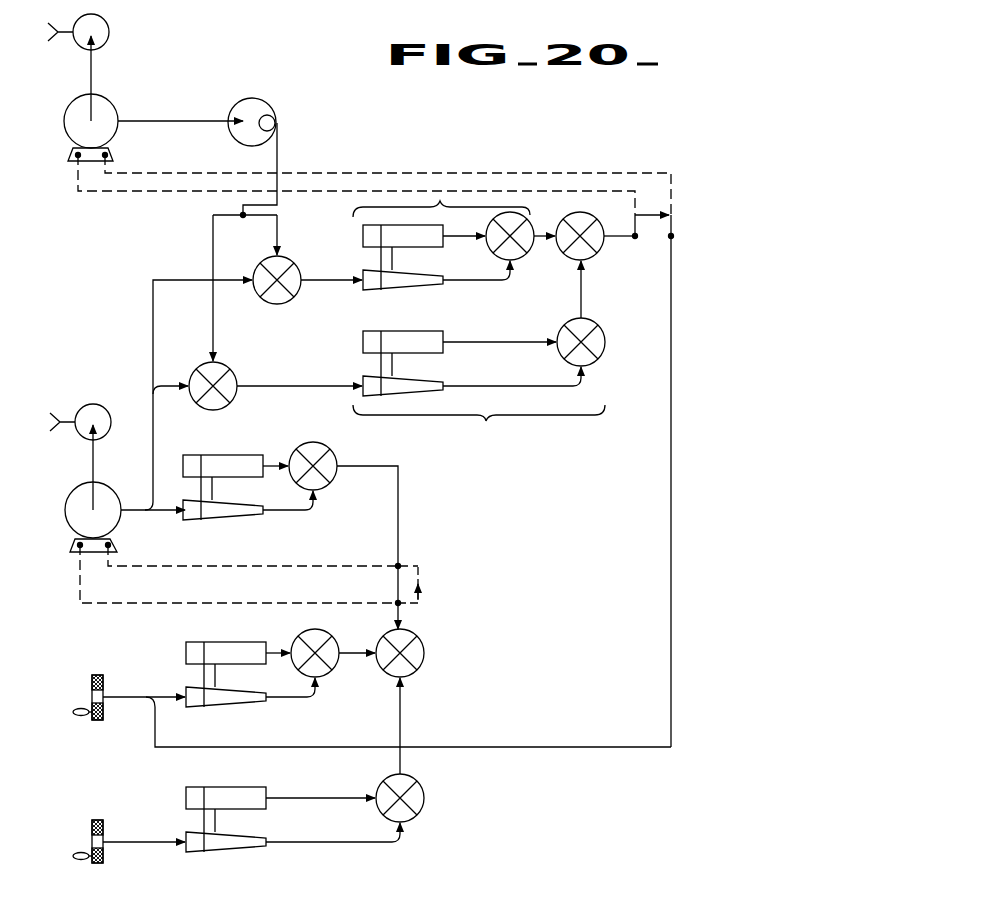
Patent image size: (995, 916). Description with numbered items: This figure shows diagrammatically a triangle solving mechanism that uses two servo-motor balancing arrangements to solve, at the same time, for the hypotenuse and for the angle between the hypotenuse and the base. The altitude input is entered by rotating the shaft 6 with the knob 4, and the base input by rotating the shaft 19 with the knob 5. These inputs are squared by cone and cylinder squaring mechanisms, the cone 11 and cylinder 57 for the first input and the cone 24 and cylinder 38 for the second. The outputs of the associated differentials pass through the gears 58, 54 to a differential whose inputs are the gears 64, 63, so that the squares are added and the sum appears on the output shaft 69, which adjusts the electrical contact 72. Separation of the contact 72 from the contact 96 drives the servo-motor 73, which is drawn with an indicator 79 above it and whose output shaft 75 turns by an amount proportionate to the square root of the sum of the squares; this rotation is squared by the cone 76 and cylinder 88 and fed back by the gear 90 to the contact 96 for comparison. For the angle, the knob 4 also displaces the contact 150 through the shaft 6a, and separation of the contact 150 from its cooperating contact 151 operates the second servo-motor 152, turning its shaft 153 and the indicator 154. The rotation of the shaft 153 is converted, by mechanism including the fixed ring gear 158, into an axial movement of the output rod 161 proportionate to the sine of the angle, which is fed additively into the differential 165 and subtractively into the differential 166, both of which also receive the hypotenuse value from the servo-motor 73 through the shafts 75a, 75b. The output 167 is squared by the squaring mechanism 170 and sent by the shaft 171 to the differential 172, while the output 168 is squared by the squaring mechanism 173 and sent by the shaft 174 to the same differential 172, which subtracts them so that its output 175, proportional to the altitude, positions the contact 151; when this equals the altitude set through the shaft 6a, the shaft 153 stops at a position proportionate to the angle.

The knob 4 is at (92, 684).
The knob 5 is at (92, 830).
The shaft 6 is at (155, 696).
The shaft 6a is at (550, 746).
The cone 11 is at (246, 702).
The shaft 19 is at (148, 843).
The cone 24 is at (245, 845).
The cylinder 38 is at (240, 791).
The gear 54 is at (416, 786).
The cylinder 57 is at (241, 648).
The gear 58 is at (325, 667).
The gear 63 is at (392, 670).
The gear 64 is at (380, 644).
The output shaft 69 is at (406, 627).
The electrical contact 72 is at (424, 603).
The servo-motor 73 is at (76, 495).
The shaft 75 is at (165, 512).
The shaft 75a is at (169, 384).
The shaft 75b is at (176, 279).
The cone 76 is at (251, 512).
The outlet pump 79 is at (101, 412).
The cylinder 88 is at (232, 458).
The gear 90 is at (333, 459).
The electrical contact 96 is at (424, 568).
The contact 150 is at (667, 222).
The contact 151 is at (643, 214).
The second servo-motor 152 is at (72, 133).
The shaft 153 is at (176, 120).
The indicator 154 is at (108, 27).
The fixed ring gear 158 is at (266, 108).
The output rod 161 is at (279, 152).
The differential 165 is at (291, 265).
The second differential 166 is at (230, 372).
The output shaft 167 is at (339, 282).
The output shaft 168 is at (300, 386).
The cone and cylinder squaring mechanism 170 is at (441, 241).
The output shaft 171 is at (544, 238).
The differential 172 is at (583, 222).
The squaring mechanism 173 is at (479, 381).
The shaft 174 is at (583, 300).
The output shaft 175 is at (620, 238).